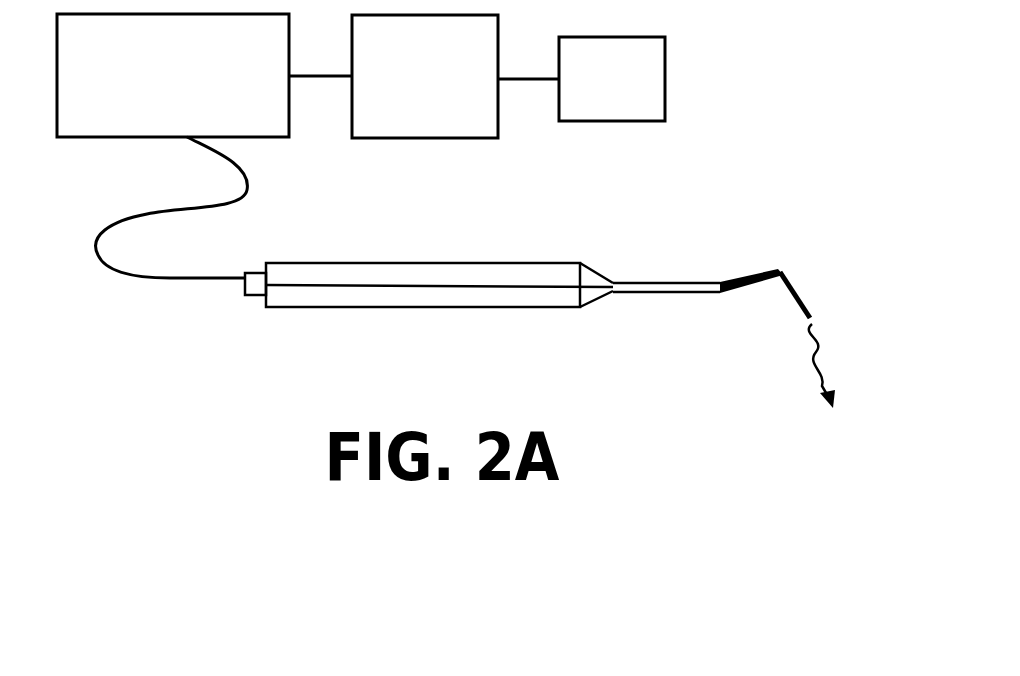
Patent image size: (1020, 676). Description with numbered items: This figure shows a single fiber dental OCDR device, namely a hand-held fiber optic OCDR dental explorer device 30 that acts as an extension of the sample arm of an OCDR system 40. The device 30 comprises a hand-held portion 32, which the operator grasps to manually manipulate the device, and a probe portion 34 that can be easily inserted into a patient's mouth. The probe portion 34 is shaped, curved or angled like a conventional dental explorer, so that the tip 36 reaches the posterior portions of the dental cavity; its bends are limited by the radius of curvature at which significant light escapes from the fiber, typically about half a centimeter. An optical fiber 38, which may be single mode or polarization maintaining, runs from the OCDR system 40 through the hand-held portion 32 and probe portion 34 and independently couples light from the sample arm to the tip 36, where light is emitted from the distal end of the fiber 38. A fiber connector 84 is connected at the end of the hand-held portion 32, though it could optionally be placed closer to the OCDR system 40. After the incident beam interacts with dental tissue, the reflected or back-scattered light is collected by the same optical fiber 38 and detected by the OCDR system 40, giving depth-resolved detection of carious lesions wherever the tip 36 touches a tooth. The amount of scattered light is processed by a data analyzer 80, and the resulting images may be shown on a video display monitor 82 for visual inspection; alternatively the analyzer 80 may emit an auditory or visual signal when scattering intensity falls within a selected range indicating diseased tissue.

The OCDR system 40 is at (150, 113).
The data analyzer 80 is at (400, 93).
The video display monitor 82 is at (587, 94).
The hand-held fiber optic OCDR dental explorer device 30 is at (480, 235).
The hand-held portion 32 is at (528, 303).
The probe portion 34 is at (688, 295).
The tip 36 is at (824, 310).
The optical fiber 38 is at (180, 280).
The fiber connector 84 is at (255, 287).